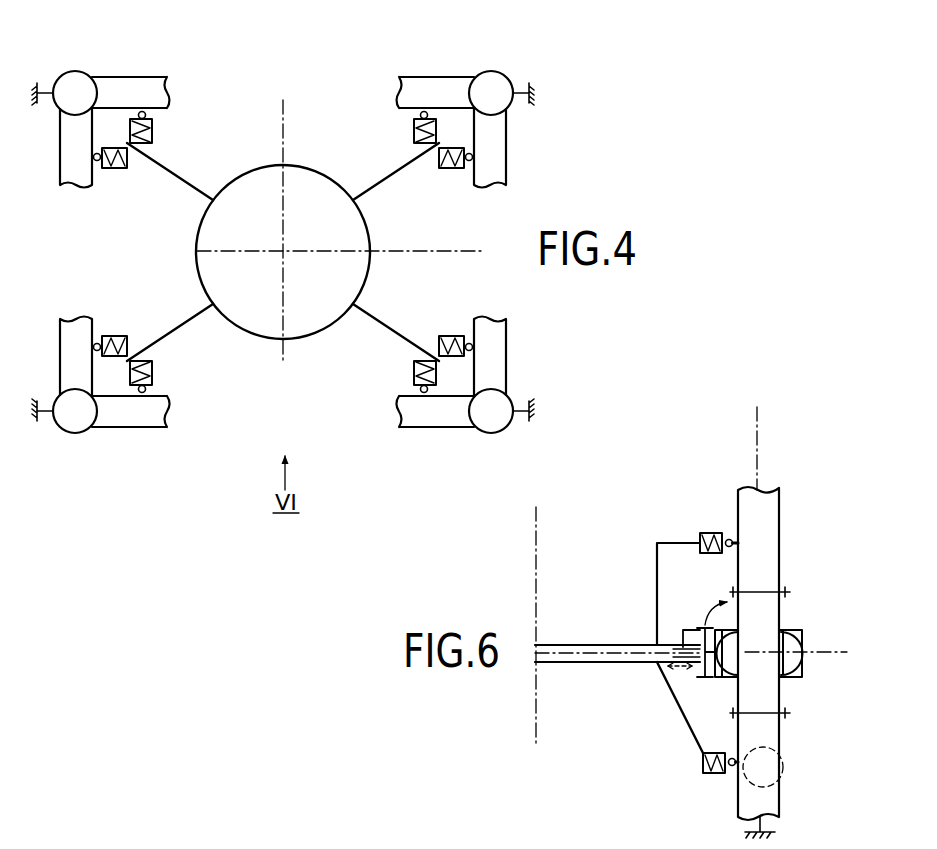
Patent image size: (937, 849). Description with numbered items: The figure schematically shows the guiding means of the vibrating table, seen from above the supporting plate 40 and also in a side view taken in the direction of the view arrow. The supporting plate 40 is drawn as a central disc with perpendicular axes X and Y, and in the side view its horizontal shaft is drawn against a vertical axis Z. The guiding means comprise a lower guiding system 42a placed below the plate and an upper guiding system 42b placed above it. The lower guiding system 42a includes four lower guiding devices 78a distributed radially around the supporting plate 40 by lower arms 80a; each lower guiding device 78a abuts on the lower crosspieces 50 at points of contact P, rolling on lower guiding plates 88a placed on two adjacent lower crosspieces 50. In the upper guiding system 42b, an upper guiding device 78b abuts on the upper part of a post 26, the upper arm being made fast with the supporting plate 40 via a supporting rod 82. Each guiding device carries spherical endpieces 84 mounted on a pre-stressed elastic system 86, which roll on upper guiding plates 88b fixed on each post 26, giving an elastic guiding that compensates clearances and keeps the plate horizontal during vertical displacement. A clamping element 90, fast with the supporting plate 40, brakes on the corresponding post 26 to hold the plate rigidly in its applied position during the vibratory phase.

In FIG. 4, the post 26 is at (496, 85).
In FIG. 6, the post 26 is at (760, 505).
In FIG. 4, the supporting plate 40 is at (311, 323).
In FIG. 6, the supporting plate 40 is at (621, 645).
In FIG. 4, the lower guiding system 42a is at (128, 102).
In FIG. 6, the lower guiding system 42a is at (709, 768).
In FIG. 6, the upper guiding system 42b is at (744, 485).
In FIG. 4, the lower crosspiece 50 is at (163, 95).
In FIG. 6, the lower crosspiece 50 is at (784, 752).
In FIG. 4, the lower guiding device 78a is at (113, 72).
In FIG. 6, the lower guiding device 78a is at (686, 778).
In FIG. 6, the upper guiding device 78b is at (716, 528).
In FIG. 4, the lower arm 80a is at (188, 183).
In FIG. 6, the lower arm 80a is at (676, 700).
In FIG. 6, the supporting rod 82 is at (657, 572).
In FIG. 4, the spherical endpiece 84 is at (421, 389).
In FIG. 6, the spherical endpiece 84 is at (733, 768).
In FIG. 4, the elastic system 86 is at (460, 333).
In FIG. 6, the elastic system 86 is at (708, 771).
In FIG. 4, the lower guiding plate 88a is at (419, 113).
In FIG. 6, the lower guiding plate 88a is at (742, 757).
In FIG. 6, the upper guiding plate 88b is at (741, 541).
In FIG. 6, the clamping element 90 is at (803, 635).
In FIG. 4, the point of contact P is at (477, 156).
In FIG. 6, the point of contact P is at (734, 753).
In FIG. 4, the X axis X is at (449, 250).
In FIG. 6, the X axis X is at (838, 655).
In FIG. 4, the Y axis Y is at (286, 128).
In FIG. 6, the Z axis Z is at (538, 528).